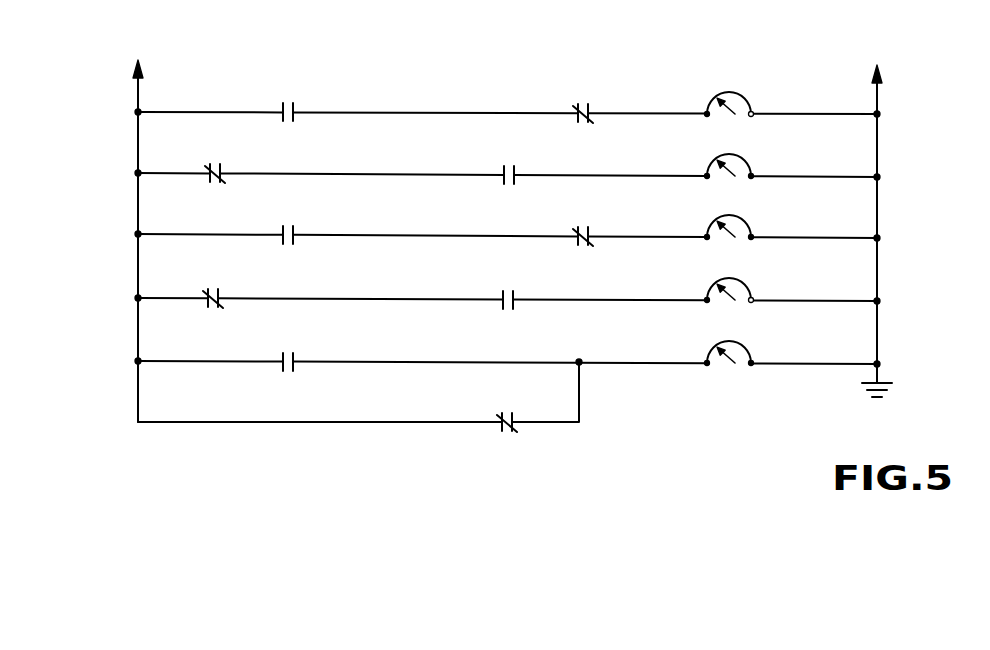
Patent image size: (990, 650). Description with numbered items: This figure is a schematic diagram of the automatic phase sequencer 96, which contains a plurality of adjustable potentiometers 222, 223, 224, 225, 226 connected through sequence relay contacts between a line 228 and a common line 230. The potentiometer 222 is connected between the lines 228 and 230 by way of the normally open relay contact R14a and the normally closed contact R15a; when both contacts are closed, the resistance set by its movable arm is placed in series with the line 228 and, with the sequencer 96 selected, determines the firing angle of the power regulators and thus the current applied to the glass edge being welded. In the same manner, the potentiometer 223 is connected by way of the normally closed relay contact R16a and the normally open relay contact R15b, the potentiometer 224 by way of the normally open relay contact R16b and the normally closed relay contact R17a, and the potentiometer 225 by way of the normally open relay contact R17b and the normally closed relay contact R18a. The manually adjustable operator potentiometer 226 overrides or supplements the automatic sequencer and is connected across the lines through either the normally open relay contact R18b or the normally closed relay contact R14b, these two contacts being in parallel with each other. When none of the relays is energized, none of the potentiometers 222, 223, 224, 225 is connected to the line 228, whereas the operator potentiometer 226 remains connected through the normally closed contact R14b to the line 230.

The automatic phase sequencer 96 is at (672, 392).
The line 228 is at (136, 99).
The common line 230 is at (880, 331).
The potentiometer 222 is at (738, 84).
The potentiometer 223 is at (738, 146).
The potentiometer 224 is at (738, 206).
The potentiometer 225 is at (738, 265).
The operator potentiometer 226 is at (738, 330).
The normally open relay contact R14a is at (289, 101).
The normally closed relay contact R14b is at (508, 412).
The normally closed relay contact R15a is at (584, 103).
The normally open relay contact R15b is at (510, 165).
The normally closed relay contact R16a is at (216, 163).
The normally open relay contact R16b is at (289, 225).
The normally closed relay contact R17a is at (584, 227).
The normally open relay contact R17b is at (509, 290).
The normally closed relay contact R18a is at (214, 288).
The normally open relay contact R18b is at (289, 352).